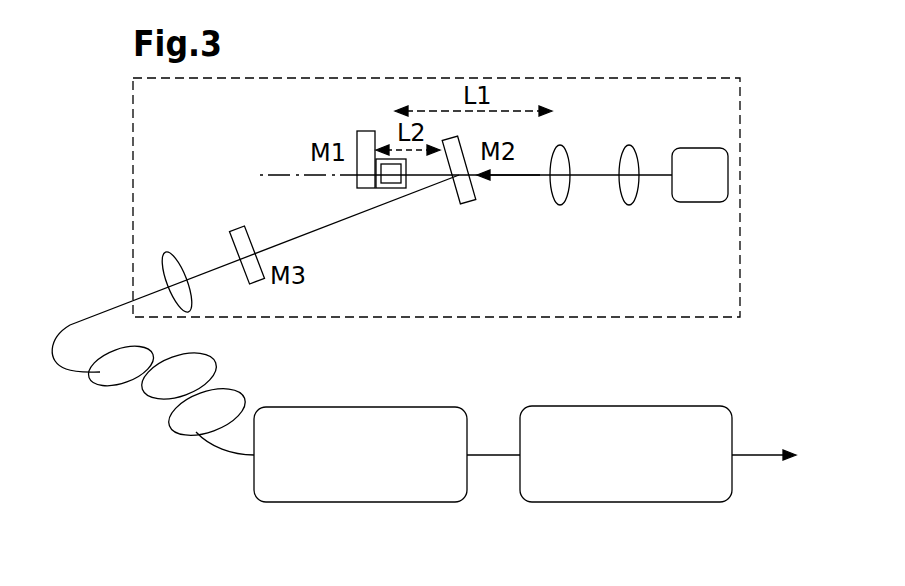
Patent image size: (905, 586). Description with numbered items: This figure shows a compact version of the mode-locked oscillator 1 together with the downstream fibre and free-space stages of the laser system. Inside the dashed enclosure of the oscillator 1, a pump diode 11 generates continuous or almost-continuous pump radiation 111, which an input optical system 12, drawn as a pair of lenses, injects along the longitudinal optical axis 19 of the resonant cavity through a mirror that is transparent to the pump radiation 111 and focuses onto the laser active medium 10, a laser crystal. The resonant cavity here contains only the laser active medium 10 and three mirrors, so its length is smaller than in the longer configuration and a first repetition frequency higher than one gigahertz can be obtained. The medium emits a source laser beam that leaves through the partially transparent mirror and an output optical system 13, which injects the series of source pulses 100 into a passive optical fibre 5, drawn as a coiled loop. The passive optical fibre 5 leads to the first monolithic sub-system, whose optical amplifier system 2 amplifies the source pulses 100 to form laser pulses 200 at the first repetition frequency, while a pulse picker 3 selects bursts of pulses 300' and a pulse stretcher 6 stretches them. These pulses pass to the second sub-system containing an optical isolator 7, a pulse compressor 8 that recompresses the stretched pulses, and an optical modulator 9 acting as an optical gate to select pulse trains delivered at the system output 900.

The mode-locked oscillator 1 is at (673, 78).
The longitudinal optical axis 19 is at (272, 174).
The laser active medium 10 is at (388, 189).
The pump radiation 111 is at (513, 178).
The input optical system 12 is at (631, 206).
The pump diode 11 is at (700, 175).
The output optical system 13 is at (183, 250).
The source pulses 100 is at (88, 316).
The passive optical fibre 5 is at (143, 413).
The optical amplifier system 2 is at (360, 454).
The pulse picker 3 is at (360, 454).
The pulse stretcher 6 is at (360, 454).
The laser pulses 200 is at (498, 397).
The signal line 300' is at (498, 397).
The optical isolator 7 is at (626, 454).
The pulse compressor 8 is at (626, 454).
The optical modulator 9 is at (626, 454).
The output signal 900 is at (753, 453).